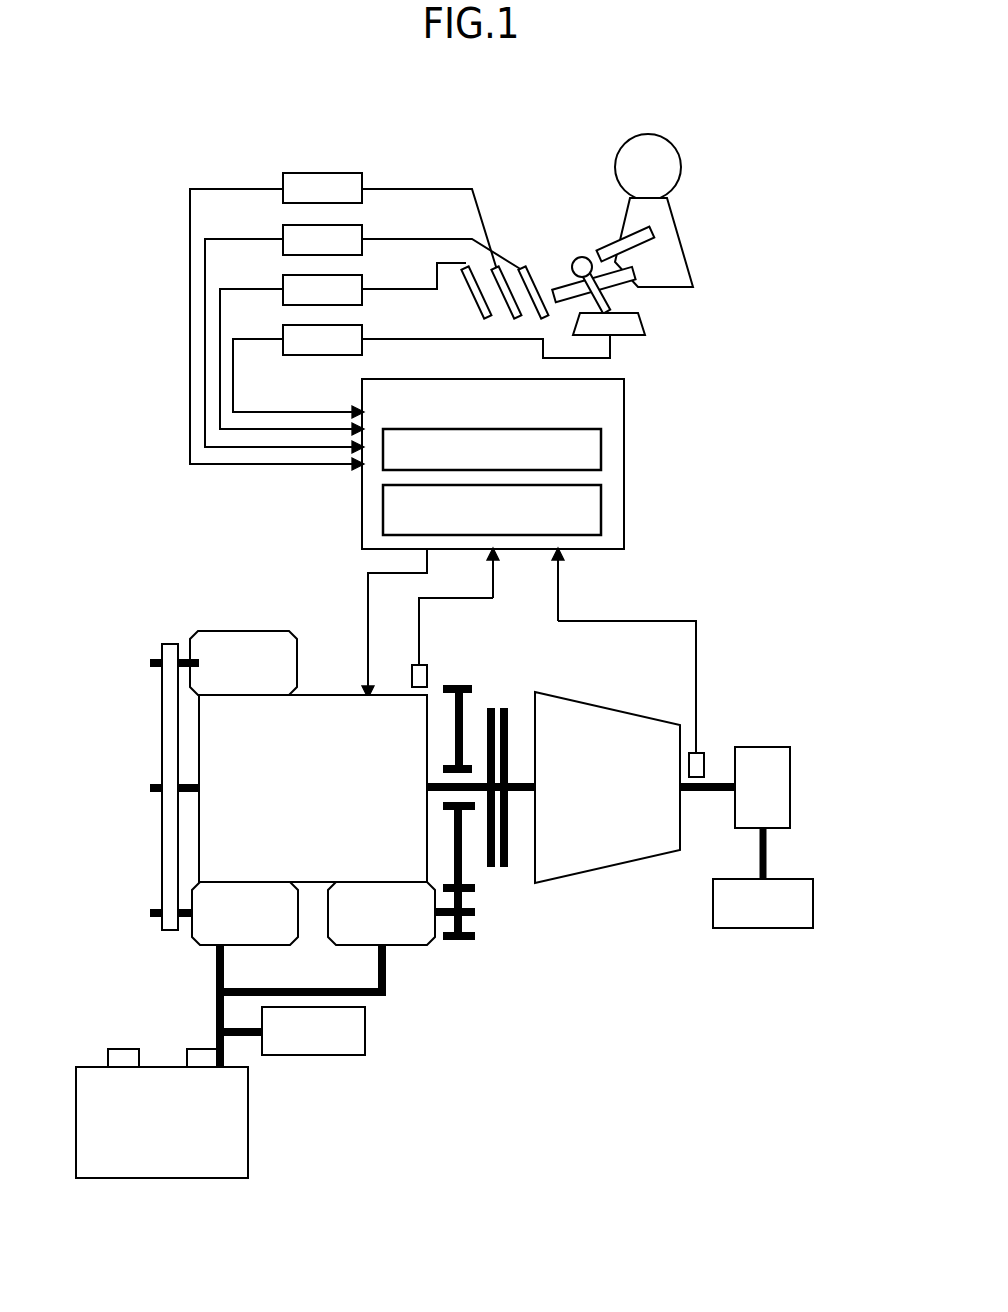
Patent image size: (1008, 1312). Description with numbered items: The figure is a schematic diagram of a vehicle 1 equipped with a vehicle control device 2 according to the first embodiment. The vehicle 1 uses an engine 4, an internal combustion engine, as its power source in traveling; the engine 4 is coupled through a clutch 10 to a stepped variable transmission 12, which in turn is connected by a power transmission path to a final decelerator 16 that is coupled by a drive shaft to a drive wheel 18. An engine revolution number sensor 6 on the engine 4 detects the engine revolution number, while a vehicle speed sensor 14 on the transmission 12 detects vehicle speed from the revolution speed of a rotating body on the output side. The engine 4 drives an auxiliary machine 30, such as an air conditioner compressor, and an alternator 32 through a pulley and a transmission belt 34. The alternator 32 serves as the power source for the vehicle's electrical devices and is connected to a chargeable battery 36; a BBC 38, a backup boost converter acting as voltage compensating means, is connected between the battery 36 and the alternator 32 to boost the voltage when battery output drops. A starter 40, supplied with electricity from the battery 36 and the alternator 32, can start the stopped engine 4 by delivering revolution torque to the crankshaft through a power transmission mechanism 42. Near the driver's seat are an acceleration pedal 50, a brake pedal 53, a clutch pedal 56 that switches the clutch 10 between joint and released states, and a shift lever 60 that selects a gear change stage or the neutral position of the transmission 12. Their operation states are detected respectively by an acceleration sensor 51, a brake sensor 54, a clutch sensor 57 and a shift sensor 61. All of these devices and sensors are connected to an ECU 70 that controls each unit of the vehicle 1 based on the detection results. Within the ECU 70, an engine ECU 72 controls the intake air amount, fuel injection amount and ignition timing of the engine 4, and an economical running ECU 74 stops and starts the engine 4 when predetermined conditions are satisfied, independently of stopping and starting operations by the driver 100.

The vehicle 1 is at (296, 146).
The vehicle control device 2 is at (731, 444).
The engine 4 is at (327, 695).
The engine revolution number sensor 6 is at (427, 676).
The clutch 10 is at (509, 730).
The transmission 12 is at (600, 705).
The vehicle speed sensor 14 is at (704, 762).
The final decelerator 16 is at (790, 785).
The drive wheel 18 is at (813, 900).
The auxiliary machine 30 is at (241, 631).
The alternator 32 is at (205, 945).
The transmission belt 34 is at (162, 851).
The battery 36 is at (248, 1123).
The BBC (Backup Boost Converter) 38 is at (365, 1030).
The starter 40 is at (410, 945).
The power transmission mechanism 42 is at (476, 920).
The acceleration pedal 50 is at (531, 292).
The acceleration sensor 51 is at (362, 180).
The brake pedal 53 is at (503, 283).
The brake sensor 54 is at (362, 232).
The clutch pedal 56 is at (469, 293).
The clutch sensor 57 is at (362, 282).
The shift lever 60 is at (582, 257).
The shift sensor 61 is at (362, 332).
The ECU 70 is at (409, 379).
The engine ECU 72 is at (601, 449).
The economical running ECU 74 is at (601, 507).
The driver 100 is at (674, 228).